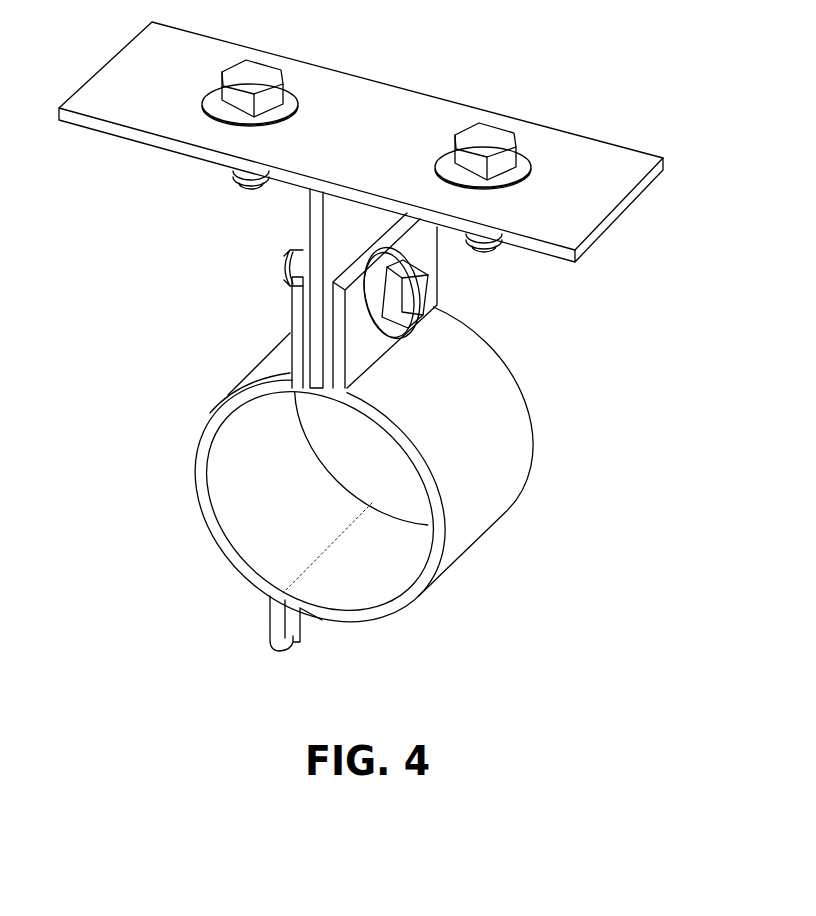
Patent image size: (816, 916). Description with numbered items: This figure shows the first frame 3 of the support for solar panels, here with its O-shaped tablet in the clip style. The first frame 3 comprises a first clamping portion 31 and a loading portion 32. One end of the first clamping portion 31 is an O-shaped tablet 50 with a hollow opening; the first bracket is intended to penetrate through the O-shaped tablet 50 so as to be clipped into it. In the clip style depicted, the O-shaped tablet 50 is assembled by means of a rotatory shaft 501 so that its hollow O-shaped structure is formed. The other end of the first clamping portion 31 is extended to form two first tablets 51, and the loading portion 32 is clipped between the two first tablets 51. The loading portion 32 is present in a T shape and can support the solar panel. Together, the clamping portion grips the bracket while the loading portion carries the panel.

The first frame 3 is at (362, 422).
The first clamping portion 31 is at (487, 447).
The loading portion 32 is at (368, 118).
The O-shaped tablet 50 is at (193, 477).
The rotatory shaft 501 is at (270, 633).
The first tablets 51 is at (290, 306).